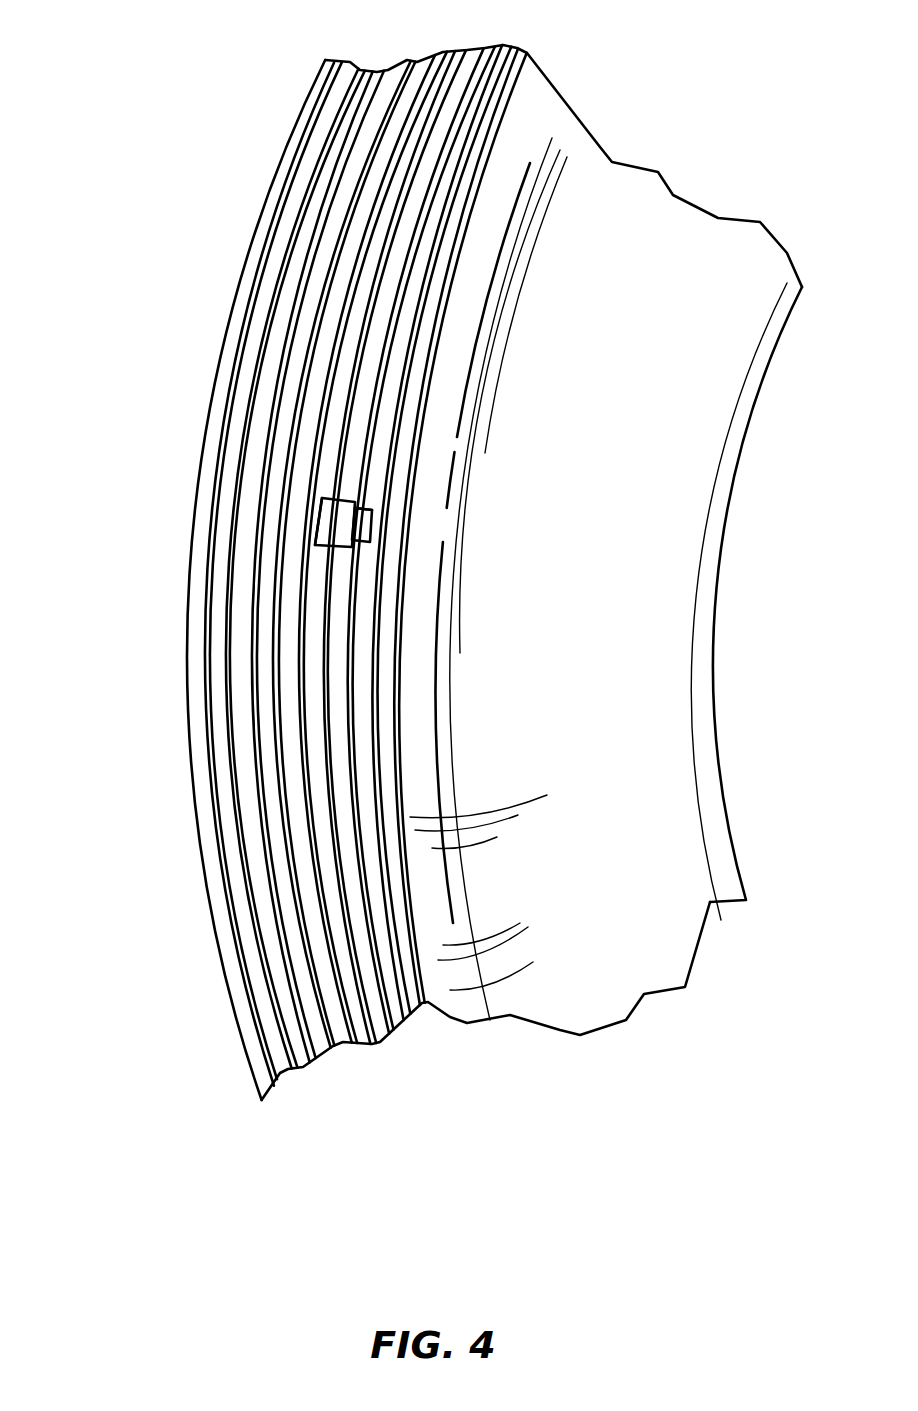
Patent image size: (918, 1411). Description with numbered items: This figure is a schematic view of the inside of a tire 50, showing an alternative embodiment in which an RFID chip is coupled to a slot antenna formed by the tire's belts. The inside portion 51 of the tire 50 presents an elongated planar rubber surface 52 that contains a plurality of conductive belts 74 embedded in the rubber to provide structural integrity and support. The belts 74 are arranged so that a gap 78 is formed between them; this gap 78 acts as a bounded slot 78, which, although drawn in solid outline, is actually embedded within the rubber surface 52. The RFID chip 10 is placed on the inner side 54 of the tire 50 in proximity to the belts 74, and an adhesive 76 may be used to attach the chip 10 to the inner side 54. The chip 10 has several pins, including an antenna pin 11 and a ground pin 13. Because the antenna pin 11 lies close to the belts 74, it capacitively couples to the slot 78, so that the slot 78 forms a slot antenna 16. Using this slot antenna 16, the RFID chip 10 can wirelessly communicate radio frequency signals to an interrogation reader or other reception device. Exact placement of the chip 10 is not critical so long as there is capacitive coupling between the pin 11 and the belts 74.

The tire 50 is at (233, 146).
The elongated planar rubber surface 52 is at (190, 530).
The inner side 54 is at (245, 668).
The inside portion 51 is at (252, 800).
The gap 78 is at (337, 400).
The adhesive 76 is at (343, 492).
The conductive belt 74 is at (407, 258).
The slot antenna 16 is at (378, 760).
The RFID chip 10 is at (330, 510).
The ground pin 13 is at (357, 542).
The antenna pin 11 is at (372, 508).